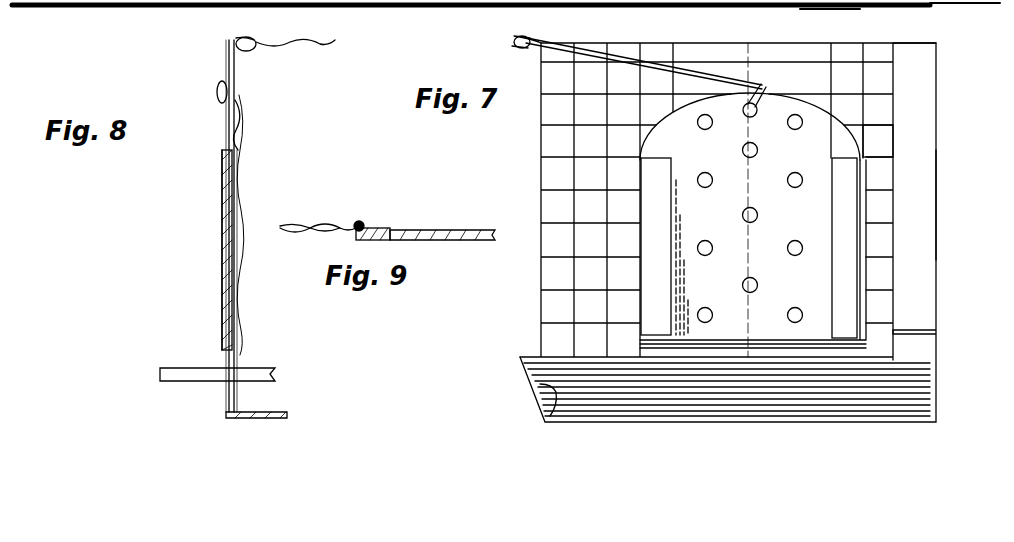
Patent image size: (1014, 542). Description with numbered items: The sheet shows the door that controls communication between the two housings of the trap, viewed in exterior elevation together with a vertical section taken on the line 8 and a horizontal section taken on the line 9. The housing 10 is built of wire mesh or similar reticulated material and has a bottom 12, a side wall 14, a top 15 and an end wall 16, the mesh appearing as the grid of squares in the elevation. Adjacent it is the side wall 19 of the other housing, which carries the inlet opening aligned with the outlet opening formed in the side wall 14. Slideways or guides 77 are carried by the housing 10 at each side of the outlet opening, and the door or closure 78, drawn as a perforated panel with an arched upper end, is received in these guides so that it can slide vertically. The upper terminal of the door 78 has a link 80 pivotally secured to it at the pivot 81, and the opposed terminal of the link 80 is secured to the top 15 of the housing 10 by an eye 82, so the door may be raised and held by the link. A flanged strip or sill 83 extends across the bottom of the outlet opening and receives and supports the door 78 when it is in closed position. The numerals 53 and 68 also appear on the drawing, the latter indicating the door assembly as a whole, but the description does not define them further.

In FIG. 7, the section line 8— 8 is at (752, 43).
In FIG. 7, the section line 9— 9 is at (630, 212).
In FIG. 7, the housing 10 is at (886, 43).
In FIG. 8, the housing 10 is at (226, 388).
In FIG. 7, the bottom 12 is at (540, 388).
In FIG. 8, the bottom 12 is at (272, 413).
In FIG. 7, the side wall 14 is at (878, 125).
In FIG. 8, the side wall 14 is at (240, 117).
In FIG. 9, the side wall 14 is at (320, 228).
In FIG. 7, the top 15 is at (651, 43).
In FIG. 8, the top 15 is at (332, 42).
In FIG. 7, the end wall 16 is at (936, 200).
In FIG. 9, the side wall 19 is at (320, 230).
In FIG. 7, the top rail 53 is at (830, 8).
In FIG. 8, the closure assembly 68 is at (248, 186).
In FIG. 7, the slideways or guides 77 is at (657, 272).
In FIG. 8, the slideways or guides 77 is at (222, 235).
In FIG. 9, the slideways or guides 77 is at (386, 230).
In FIG. 7, the door or closure 78 is at (815, 288).
In FIG. 8, the door or closure 78 is at (224, 136).
In FIG. 9, the door or closure 78 is at (426, 232).
In FIG. 7, the link 80 is at (697, 70).
In FIG. 7, the pivot 81 is at (765, 84).
In FIG. 8, the pivot 81 is at (218, 86).
In FIG. 7, the eye 82 is at (518, 36).
In FIG. 8, the eye 82 is at (250, 38).
In FIG. 7, the flanged strip or sill 83 is at (728, 347).